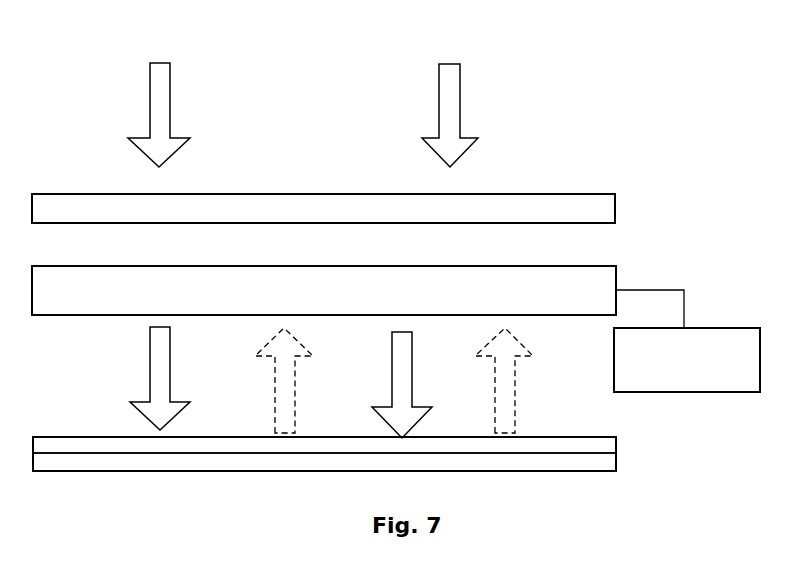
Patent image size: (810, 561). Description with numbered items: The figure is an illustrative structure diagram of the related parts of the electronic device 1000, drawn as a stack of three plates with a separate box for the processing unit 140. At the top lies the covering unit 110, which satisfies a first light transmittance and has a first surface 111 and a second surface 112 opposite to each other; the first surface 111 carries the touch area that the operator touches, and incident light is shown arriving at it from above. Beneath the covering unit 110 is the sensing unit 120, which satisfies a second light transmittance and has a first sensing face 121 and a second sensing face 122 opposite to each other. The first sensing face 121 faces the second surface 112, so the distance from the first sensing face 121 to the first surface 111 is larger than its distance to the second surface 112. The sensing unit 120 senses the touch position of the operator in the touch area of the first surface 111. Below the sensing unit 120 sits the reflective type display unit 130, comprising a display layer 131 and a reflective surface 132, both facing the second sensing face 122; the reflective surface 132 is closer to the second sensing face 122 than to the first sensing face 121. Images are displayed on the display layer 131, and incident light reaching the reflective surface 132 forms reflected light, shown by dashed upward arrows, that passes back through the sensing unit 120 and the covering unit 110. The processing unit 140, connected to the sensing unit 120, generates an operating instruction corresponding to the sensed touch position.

The electronic device 1000 is at (594, 97).
The covering unit 110 is at (616, 206).
The first surface 111 is at (538, 194).
The second surface 112 is at (540, 224).
The sensing unit 120 is at (617, 288).
The first sensing face 121 is at (235, 266).
The second sensing face 122 is at (97, 316).
The reflective type display unit 130 is at (617, 453).
The display layer 131 is at (552, 444).
The reflective surface 132 is at (96, 453).
The processing unit 140 is at (687, 392).